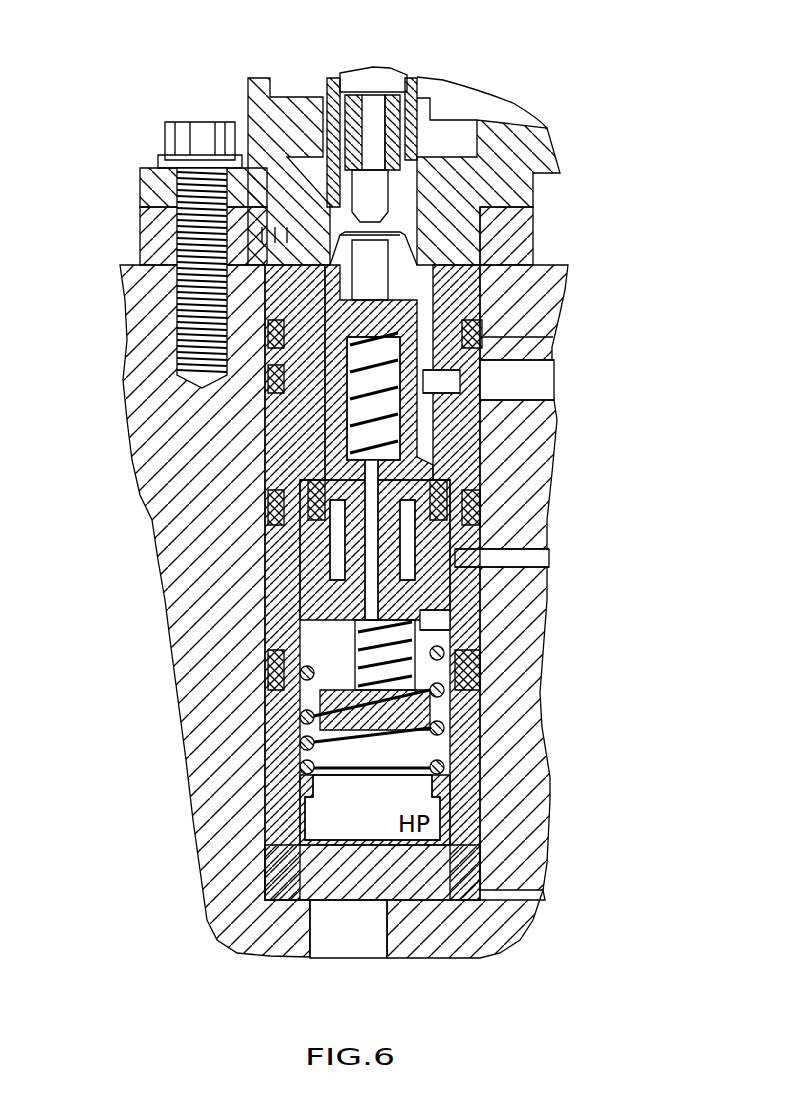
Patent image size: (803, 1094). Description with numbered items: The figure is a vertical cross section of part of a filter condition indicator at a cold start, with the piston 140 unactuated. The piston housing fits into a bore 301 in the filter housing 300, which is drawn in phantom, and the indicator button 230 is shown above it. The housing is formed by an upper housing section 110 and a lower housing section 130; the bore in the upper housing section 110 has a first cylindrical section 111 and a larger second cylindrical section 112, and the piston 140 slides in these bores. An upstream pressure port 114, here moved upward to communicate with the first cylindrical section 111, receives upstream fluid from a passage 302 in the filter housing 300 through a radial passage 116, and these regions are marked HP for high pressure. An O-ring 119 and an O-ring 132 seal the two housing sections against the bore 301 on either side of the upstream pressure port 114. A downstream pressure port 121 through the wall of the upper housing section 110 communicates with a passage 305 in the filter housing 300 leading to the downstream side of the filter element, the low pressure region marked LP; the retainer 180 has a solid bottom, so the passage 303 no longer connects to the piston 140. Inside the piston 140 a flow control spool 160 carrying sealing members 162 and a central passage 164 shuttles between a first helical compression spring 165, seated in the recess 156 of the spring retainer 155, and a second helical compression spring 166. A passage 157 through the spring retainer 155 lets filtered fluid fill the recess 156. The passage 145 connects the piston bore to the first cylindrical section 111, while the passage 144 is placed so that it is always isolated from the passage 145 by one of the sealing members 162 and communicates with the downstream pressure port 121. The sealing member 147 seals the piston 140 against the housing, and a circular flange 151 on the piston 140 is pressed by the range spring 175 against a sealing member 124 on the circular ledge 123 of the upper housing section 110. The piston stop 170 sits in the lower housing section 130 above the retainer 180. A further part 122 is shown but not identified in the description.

The upper housing section 110 is at (527, 233).
The first cylindrical section 111 is at (330, 262).
The second cylindrical section 112 is at (290, 628).
The upstream pressure port 114 is at (545, 362).
The radial passage 116 is at (475, 390).
The O-ring 119 is at (485, 335).
The downstream pressure port 121 is at (450, 560).
The seal 122 is at (470, 495).
The circular ledge 123 is at (290, 600).
The sealing member 124 is at (460, 605).
The lower housing section 130 is at (460, 690).
The O-ring 132 is at (450, 650).
The piston 140 is at (290, 575).
The passage 144 is at (455, 520).
The passage 145 is at (300, 450).
The sealing member 147 is at (480, 470).
The circular flange 151 is at (300, 665).
The spring retainer 155 is at (470, 720).
The recess 156 is at (455, 620).
The passage 157 is at (334, 824).
The flow control spool 160 is at (300, 540).
The sealing members 162 is at (293, 369).
The passage 164 is at (270, 500).
The first helical compression spring 165 is at (330, 720).
The second helical compression spring 166 is at (375, 345).
The piston stop 170 is at (450, 825).
The range spring 175 is at (450, 760).
The retainer 180 is at (452, 885).
The indicator button 230 is at (325, 92).
The filter housing 300 is at (130, 250).
The bore 301 is at (275, 400).
The passage 302 is at (550, 405).
The passage 303 is at (312, 927).
The passage 305 is at (560, 568).
The high pressure HP is at (540, 385).
The low pressure LP is at (510, 555).